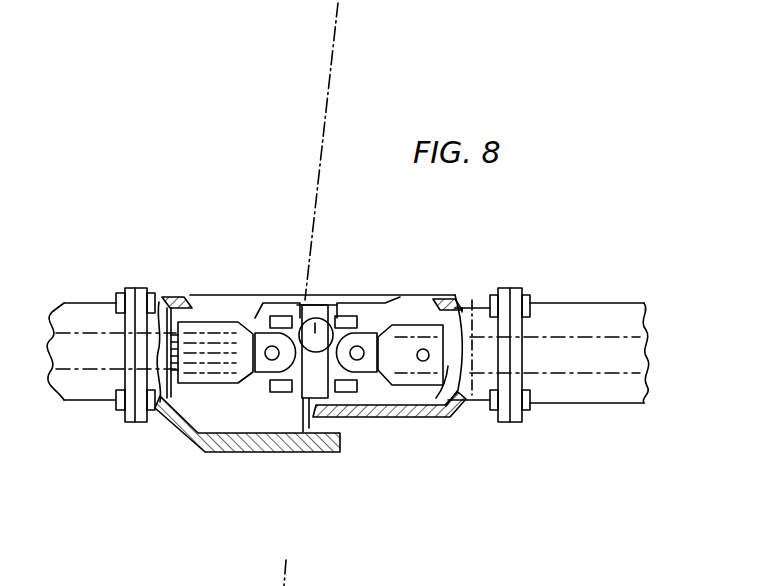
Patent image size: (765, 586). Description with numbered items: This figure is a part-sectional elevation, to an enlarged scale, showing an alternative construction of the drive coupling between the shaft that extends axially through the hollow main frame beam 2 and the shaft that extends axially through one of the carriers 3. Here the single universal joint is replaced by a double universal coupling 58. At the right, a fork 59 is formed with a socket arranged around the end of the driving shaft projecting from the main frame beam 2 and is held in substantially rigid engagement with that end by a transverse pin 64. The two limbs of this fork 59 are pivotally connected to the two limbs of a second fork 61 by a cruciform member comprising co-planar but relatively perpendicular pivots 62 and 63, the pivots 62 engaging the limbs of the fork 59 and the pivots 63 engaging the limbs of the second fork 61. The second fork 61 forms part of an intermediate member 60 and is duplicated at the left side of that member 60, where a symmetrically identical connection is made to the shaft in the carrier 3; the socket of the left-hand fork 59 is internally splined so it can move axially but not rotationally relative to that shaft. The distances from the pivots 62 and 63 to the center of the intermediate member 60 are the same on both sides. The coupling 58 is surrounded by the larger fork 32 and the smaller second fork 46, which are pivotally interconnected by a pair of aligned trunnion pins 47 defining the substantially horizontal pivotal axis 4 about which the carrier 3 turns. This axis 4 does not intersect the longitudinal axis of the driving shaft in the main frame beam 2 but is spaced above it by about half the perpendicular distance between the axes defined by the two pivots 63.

The hollow main frame beam 2 is at (585, 403).
The carrier 3 is at (322, 128).
The pivotal axis 4 is at (326, 316).
The larger fork 32 is at (205, 446).
The second fork 46 is at (426, 420).
The trunnion pin 47 is at (345, 303).
The double universal coupling 58 is at (303, 432).
The fork 59 is at (207, 321).
The intermediate member 60 is at (303, 393).
The second fork 61 is at (267, 392).
The pivot 62 is at (278, 318).
The pivot 63 is at (258, 386).
The transverse pin 64 is at (427, 360).